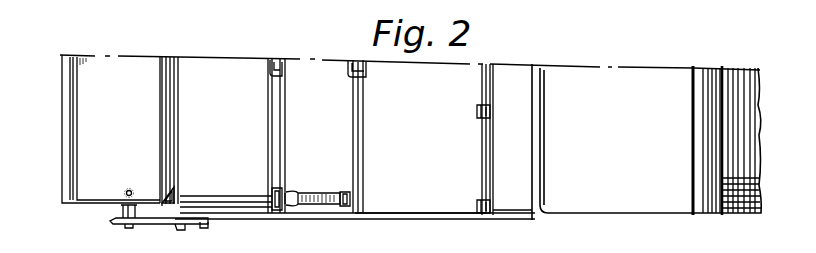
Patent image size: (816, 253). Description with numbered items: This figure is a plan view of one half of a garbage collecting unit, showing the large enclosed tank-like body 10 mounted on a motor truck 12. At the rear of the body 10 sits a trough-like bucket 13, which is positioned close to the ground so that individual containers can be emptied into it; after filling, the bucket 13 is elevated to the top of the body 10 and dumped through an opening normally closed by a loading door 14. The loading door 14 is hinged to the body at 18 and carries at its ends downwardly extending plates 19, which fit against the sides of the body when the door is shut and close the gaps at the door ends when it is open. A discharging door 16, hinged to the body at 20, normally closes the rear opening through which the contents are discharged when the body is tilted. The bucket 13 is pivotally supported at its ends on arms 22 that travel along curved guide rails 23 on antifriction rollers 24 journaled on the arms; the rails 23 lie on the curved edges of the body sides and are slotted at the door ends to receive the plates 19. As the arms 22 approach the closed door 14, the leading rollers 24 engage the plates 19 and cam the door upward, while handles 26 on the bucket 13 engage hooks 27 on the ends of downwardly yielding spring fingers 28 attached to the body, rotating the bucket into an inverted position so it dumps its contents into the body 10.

The tank-like body 10 is at (324, 212).
The motor truck 12 is at (743, 211).
The trough-like bucket 13 is at (82, 198).
The loading door 14 is at (437, 210).
The discharging door 16 is at (247, 190).
The hinge 18 is at (492, 113).
The end closure plates 19 is at (395, 218).
The hinge 20 is at (283, 74).
The arms 22 is at (143, 223).
The curved guide rails 23 is at (292, 213).
The antifriction rollers 24 is at (179, 226).
The handles 26 is at (176, 193).
The hooks 27 is at (351, 198).
The spring fingers 28 is at (322, 193).